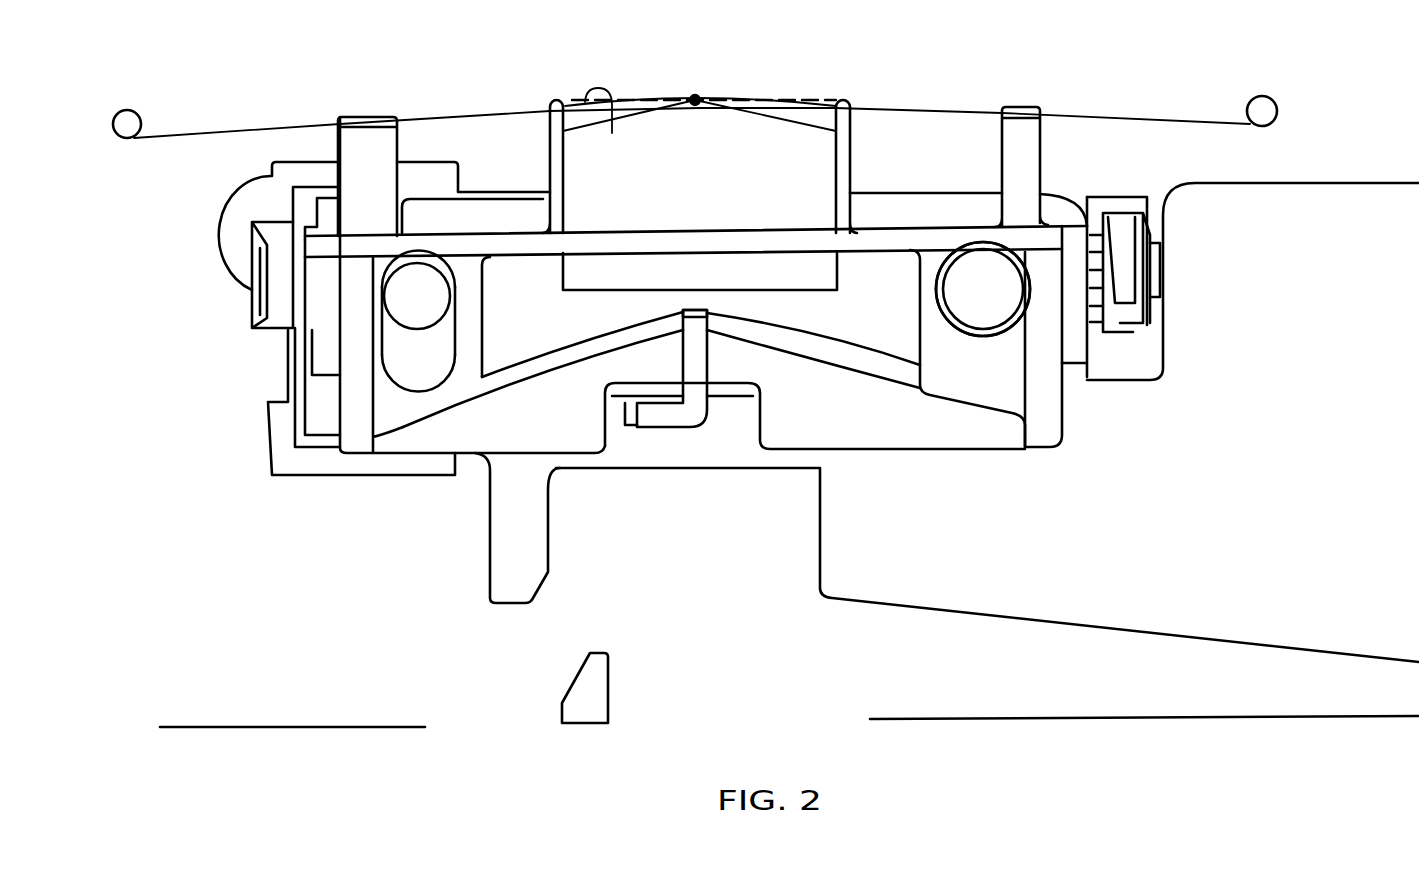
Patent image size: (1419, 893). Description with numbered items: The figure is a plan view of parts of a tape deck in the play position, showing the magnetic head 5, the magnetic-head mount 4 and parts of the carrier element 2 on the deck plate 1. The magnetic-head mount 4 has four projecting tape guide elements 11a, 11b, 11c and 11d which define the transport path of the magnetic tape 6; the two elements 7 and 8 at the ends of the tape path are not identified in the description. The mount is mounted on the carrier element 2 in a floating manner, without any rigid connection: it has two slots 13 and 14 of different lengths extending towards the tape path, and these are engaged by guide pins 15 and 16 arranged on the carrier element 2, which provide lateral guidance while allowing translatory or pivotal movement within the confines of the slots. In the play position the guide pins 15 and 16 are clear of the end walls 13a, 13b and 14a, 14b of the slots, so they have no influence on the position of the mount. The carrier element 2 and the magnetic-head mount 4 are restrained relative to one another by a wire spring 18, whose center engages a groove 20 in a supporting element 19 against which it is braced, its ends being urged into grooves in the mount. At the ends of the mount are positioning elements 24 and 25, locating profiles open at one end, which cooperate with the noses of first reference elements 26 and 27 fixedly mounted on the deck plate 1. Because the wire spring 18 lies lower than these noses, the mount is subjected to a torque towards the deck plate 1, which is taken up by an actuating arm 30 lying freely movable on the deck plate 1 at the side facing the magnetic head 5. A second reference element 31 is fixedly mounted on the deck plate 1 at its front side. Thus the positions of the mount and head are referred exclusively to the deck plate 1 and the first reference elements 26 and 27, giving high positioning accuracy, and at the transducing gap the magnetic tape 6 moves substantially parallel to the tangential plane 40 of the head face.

The deck plate 1 is at (265, 725).
The carrier element 2 is at (965, 613).
The magnetic-head mount 4 is at (1063, 418).
The magnetic head 5 is at (727, 135).
The magnetic tape 6 is at (928, 108).
The guide pulley 7 is at (1272, 105).
The guide pulley 8 is at (126, 121).
The tape guide element 11a is at (345, 118).
The tape guide element 11b is at (554, 104).
The tape guide element 11c is at (841, 103).
The tape guide element 11d is at (1026, 104).
The slot 13 is at (455, 348).
The end wall of slot 13a is at (421, 388).
The end wall of slot 13b is at (420, 252).
The slot 14 is at (935, 297).
The end wall of slot 14a is at (977, 348).
The end wall of slot 14b is at (975, 240).
The guide pin 15 is at (432, 333).
The guide pin 16 is at (955, 320).
The wire spring 18 is at (845, 345).
The supporting element 19 is at (697, 360).
The groove 20 is at (700, 322).
The positioning element 24 is at (1073, 353).
The positioning element 25 is at (320, 347).
The first reference element 26 is at (1127, 280).
The first reference element 27 is at (278, 290).
The actuating arm 30 is at (507, 545).
The second reference element 31 is at (597, 688).
The tangential plane 40 is at (607, 125).